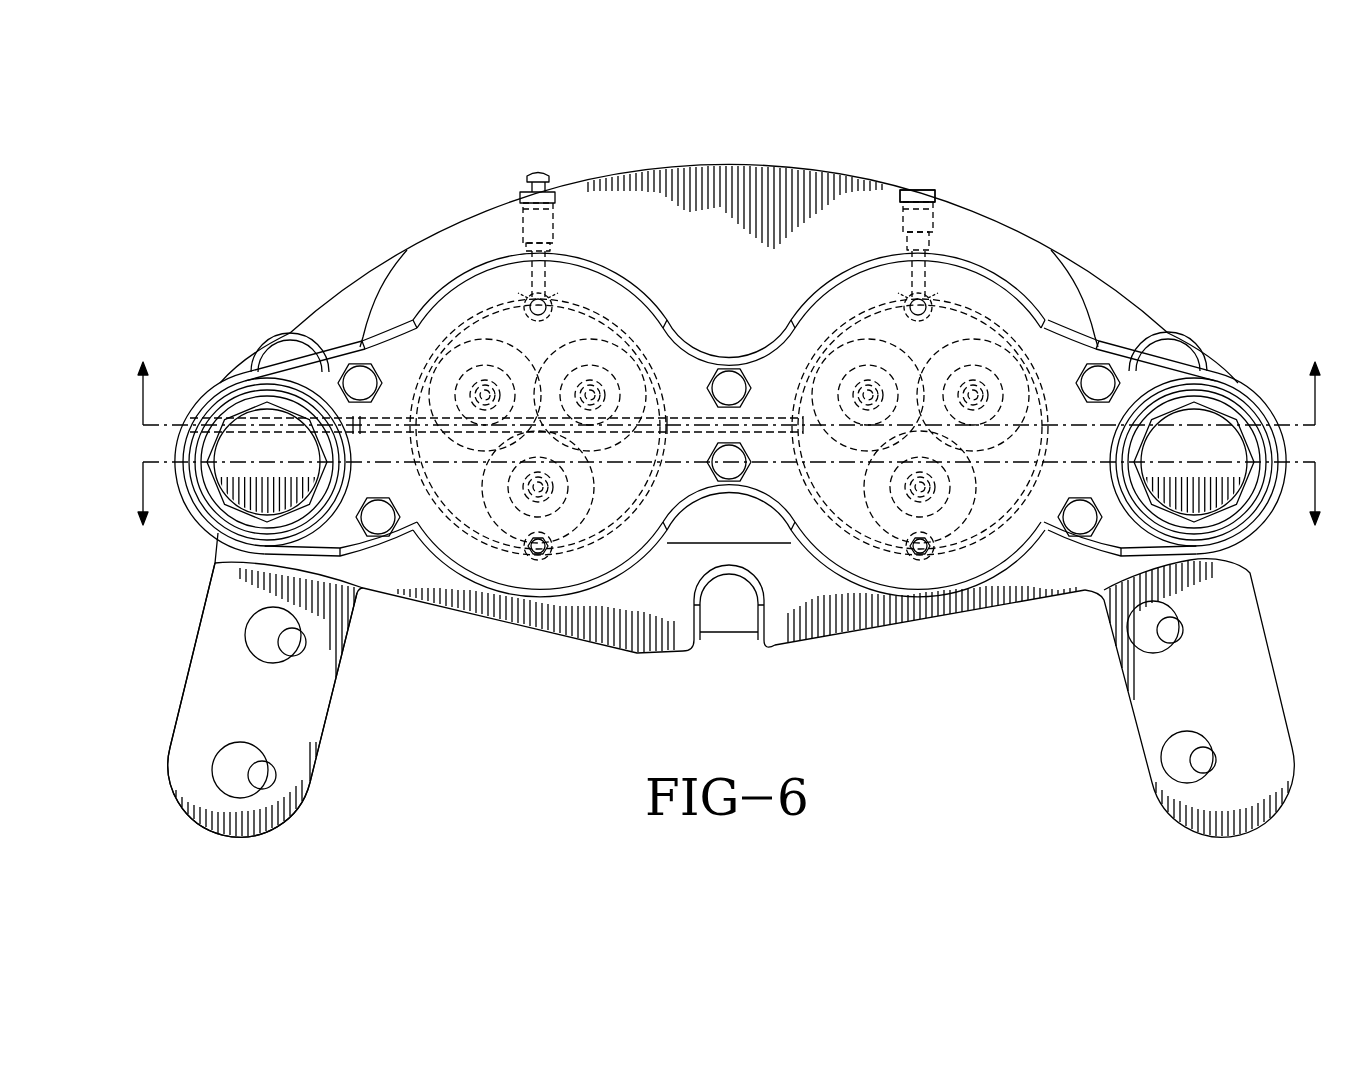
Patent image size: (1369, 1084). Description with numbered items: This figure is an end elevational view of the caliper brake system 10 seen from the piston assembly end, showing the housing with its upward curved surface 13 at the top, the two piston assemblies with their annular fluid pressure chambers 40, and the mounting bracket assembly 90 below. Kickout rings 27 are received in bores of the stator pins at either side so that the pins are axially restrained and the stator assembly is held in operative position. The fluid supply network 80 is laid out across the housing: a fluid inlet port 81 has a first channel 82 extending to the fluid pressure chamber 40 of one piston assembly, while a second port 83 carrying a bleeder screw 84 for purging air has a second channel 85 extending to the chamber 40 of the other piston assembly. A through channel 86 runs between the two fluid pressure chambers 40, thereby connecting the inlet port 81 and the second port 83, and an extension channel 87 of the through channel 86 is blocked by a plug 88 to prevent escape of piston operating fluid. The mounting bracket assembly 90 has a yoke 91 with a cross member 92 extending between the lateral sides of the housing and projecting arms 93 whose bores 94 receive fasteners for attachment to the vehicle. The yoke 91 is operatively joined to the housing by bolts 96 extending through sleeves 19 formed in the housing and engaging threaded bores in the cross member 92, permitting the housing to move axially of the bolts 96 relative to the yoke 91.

The caliper brake system 10 is at (86, 262).
The upward curved surface 13 is at (660, 166).
The sleeves 19 is at (215, 398).
The kickout rings 27 is at (282, 330).
The annular fluid pressure chamber 40 is at (612, 272).
The fluid supply network 80 is at (937, 186).
The fluid inlet port 81 is at (890, 220).
The first channel 82 is at (900, 272).
The second port 83 is at (560, 222).
The bleeder screw 84 is at (537, 168).
The second channel 85 is at (562, 274).
The through channel 86 is at (706, 420).
The extension channel 87 is at (190, 446).
The plug 88 is at (245, 368).
The mounting bracket assembly 90 is at (170, 703).
The yoke 91 is at (883, 628).
The cross member 92 is at (655, 628).
The projecting arms 93 is at (302, 723).
The bores 94 is at (312, 665).
The bolts 96 is at (250, 473).